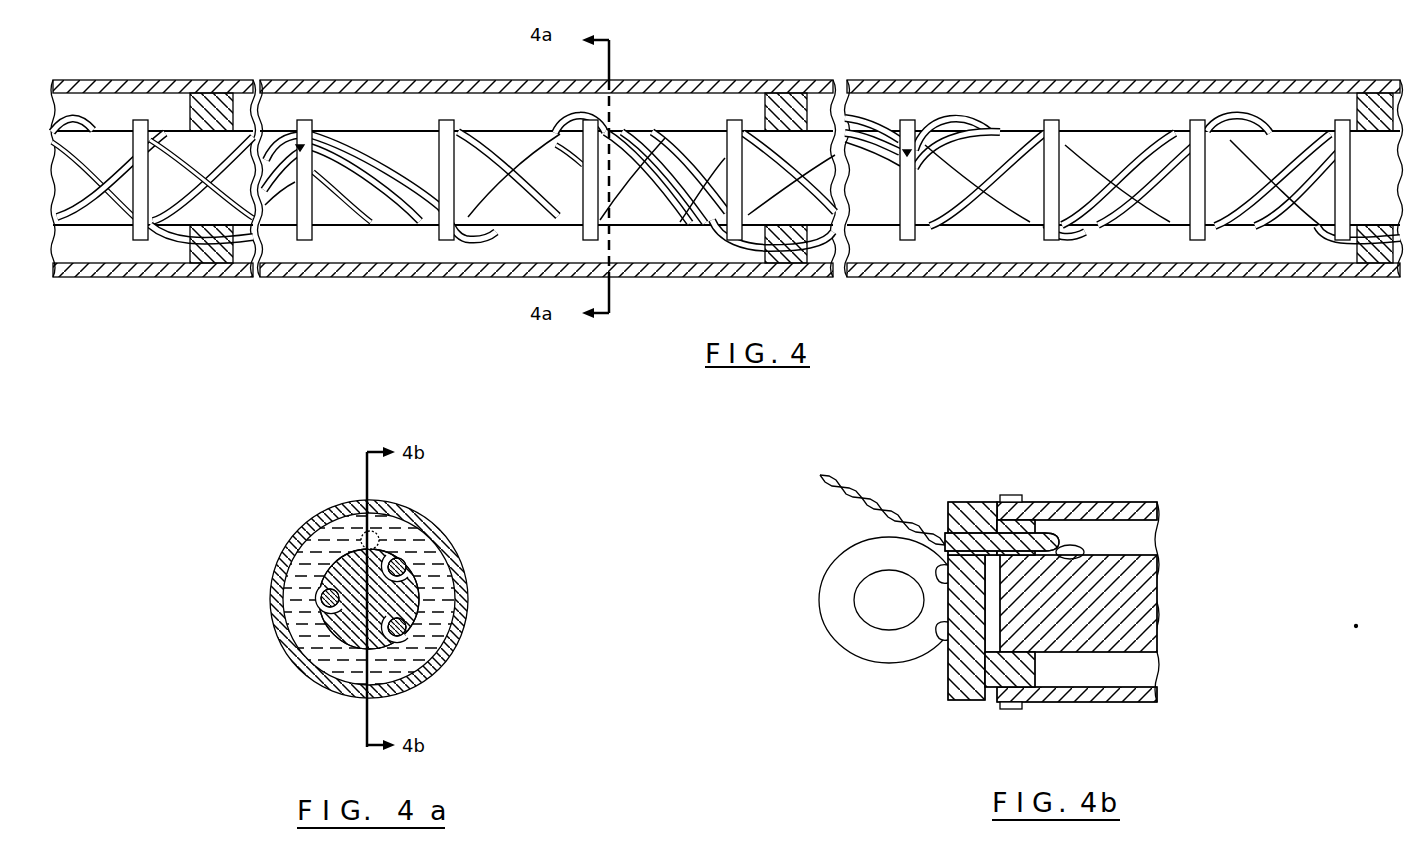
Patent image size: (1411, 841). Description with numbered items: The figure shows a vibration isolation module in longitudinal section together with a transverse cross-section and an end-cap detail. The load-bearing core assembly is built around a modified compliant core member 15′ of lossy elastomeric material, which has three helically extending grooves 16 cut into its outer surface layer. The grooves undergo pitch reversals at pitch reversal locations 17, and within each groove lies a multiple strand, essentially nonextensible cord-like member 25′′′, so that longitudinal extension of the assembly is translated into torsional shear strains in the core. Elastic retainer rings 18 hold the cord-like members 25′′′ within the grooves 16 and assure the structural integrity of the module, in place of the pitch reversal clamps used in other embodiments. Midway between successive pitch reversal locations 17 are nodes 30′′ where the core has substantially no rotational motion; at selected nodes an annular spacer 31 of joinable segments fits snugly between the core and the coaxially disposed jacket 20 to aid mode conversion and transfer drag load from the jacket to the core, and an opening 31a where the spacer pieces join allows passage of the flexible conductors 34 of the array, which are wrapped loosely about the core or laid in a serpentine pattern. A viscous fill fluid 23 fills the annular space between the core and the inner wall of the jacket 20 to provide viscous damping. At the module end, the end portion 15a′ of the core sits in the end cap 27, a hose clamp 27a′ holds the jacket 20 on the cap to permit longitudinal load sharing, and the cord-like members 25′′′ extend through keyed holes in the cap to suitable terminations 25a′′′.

In FIG. 4, the compliant core member 15′ is at (490, 130).
In FIG. 4A, the compliant core member 15′ is at (380, 635).
In FIG. 4B, the compliant core member 15′ is at (1085, 613).
In FIG. 4B, the end portion of the elastomeric core 15a′ is at (960, 700).
In FIG. 4, the helically extending grooves 16 is at (828, 140).
In FIG. 4A, the helically extending grooves 16 is at (335, 570).
In FIG. 4, the pitch reversal locations 17 is at (300, 143).
In FIG. 4, the elastic retainer rings 18 is at (447, 128).
In FIG. 4, the jacket 20 is at (135, 80).
In FIG. 4A, the jacket 20 is at (450, 540).
In FIG. 4B, the jacket 20 is at (1098, 502).
In FIG. 4, the fill fluid 23 is at (384, 118).
In FIG. 4A, the fill fluid 23 is at (440, 587).
In FIG. 4, the multiple strand cord-like member 25′′′ is at (415, 205).
In FIG. 4A, the multiple strand cord-like member 25′′′ is at (400, 558).
In FIG. 4B, the terminations 25a′′′ is at (940, 640).
In FIG. 4B, the end cap 27 is at (967, 503).
In FIG. 4B, the hose clamp 27a′ is at (1010, 495).
In FIG. 4, the nodes 30′′ is at (222, 157).
In FIG. 4, the annular spacer 31 is at (195, 100).
In FIG. 4, the opening 31a is at (207, 262).
In FIG. 4, the conductors 34 is at (1086, 236).
In FIG. 4A, the conductors 34 is at (360, 515).
In FIG. 4B, the conductors 34 is at (1078, 556).